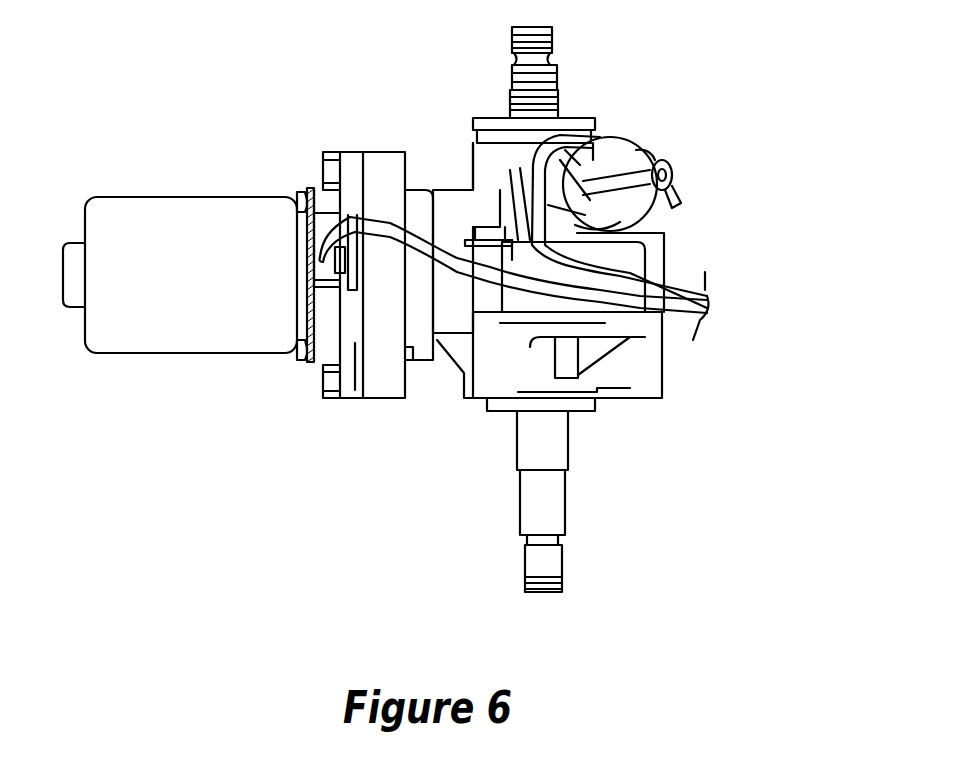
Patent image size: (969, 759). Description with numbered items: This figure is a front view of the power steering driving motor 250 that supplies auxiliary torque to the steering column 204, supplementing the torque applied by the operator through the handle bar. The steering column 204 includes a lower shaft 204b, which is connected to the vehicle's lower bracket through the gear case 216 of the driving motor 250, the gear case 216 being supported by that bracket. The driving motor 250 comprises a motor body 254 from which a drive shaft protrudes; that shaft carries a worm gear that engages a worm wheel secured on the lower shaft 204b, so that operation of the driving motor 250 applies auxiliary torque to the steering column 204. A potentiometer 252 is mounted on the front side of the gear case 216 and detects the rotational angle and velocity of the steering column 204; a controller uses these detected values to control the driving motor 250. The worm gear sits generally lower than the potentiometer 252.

The steering column 204 is at (567, 44).
The lower shaft 204b is at (565, 525).
The gear case 216 is at (665, 363).
The driving motor 250 is at (222, 355).
The potentiometer 252 is at (625, 140).
The motor body 254 is at (265, 355).